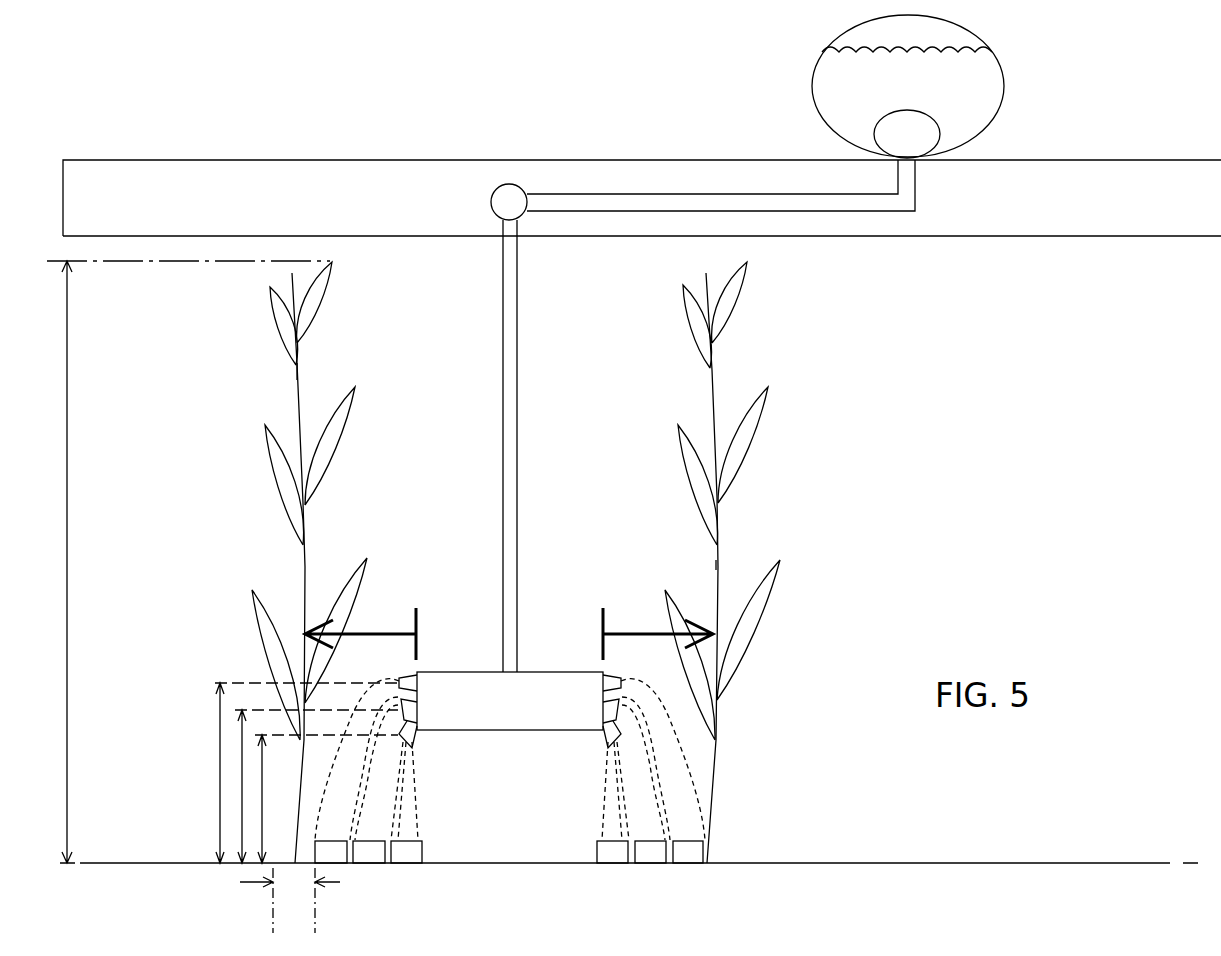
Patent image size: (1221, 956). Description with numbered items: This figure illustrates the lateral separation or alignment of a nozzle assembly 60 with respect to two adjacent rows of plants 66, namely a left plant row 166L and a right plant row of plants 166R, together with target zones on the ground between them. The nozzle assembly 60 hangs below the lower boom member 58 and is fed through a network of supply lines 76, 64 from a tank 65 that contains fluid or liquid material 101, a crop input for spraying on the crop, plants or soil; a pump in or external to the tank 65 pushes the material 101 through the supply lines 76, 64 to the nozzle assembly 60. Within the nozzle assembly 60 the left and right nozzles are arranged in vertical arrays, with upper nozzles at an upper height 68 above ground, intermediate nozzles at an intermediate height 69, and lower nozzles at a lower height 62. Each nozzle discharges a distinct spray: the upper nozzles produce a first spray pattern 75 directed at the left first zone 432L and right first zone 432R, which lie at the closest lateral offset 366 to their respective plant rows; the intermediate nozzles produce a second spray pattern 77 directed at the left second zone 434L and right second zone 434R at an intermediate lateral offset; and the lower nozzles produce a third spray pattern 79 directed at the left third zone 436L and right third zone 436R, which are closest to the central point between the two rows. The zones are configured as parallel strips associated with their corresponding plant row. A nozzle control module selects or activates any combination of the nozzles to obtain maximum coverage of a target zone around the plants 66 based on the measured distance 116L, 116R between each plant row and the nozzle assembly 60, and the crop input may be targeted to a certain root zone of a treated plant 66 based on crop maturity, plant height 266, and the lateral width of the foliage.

The lower boom member 58 is at (1088, 160).
The nozzle assembly 60 is at (524, 714).
The lower height 62 is at (262, 810).
The supply line 64 is at (512, 366).
The tank 65 is at (1015, 50).
The plant 66 is at (296, 377).
The upper height 68 is at (220, 742).
The intermediate height 69 is at (242, 775).
The first spray pattern 75 is at (347, 762).
The supply line 76 is at (616, 202).
The second spray pattern 77 is at (908, 133).
The third spray pattern 79 is at (405, 828).
The material 101 is at (907, 82).
The measured distance 116L is at (380, 632).
The measured distance 116R is at (643, 632).
The left plant row 166L is at (297, 390).
The right plant row of plants 166R is at (713, 390).
The plant height 266 is at (68, 566).
The lateral offset 366 is at (250, 882).
The left first zone 432L is at (333, 853).
The left second zone 434L is at (367, 853).
The left third zone 436L is at (410, 853).
The right first zone 432R is at (685, 853).
The right second zone 434R is at (652, 853).
The right third zone 436R is at (609, 853).